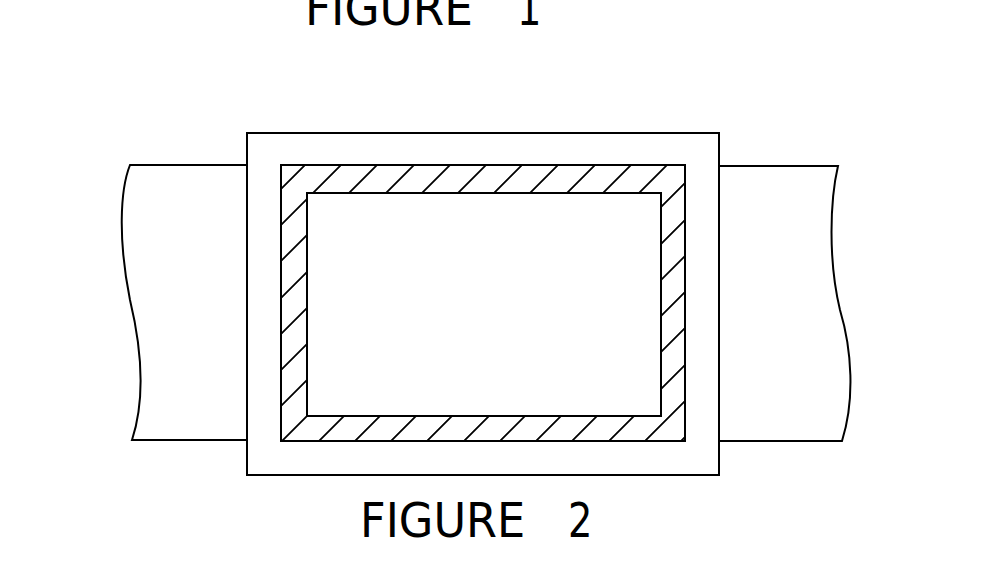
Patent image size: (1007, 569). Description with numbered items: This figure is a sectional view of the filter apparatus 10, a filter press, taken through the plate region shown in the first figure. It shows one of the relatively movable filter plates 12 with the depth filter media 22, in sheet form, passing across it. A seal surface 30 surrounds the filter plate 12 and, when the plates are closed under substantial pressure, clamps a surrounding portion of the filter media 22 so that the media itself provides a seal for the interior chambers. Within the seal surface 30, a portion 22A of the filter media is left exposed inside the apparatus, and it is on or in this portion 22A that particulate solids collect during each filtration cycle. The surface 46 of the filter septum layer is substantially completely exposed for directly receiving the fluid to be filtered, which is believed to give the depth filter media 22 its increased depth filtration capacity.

The filter apparatus 10 is at (662, 120).
The seal surface 30 is at (283, 148).
The filter plate 12 is at (293, 378).
The surface of the filter septum layer 46 is at (403, 288).
The depth filter media 22 is at (200, 247).
The portion of the filter media 22A is at (621, 303).